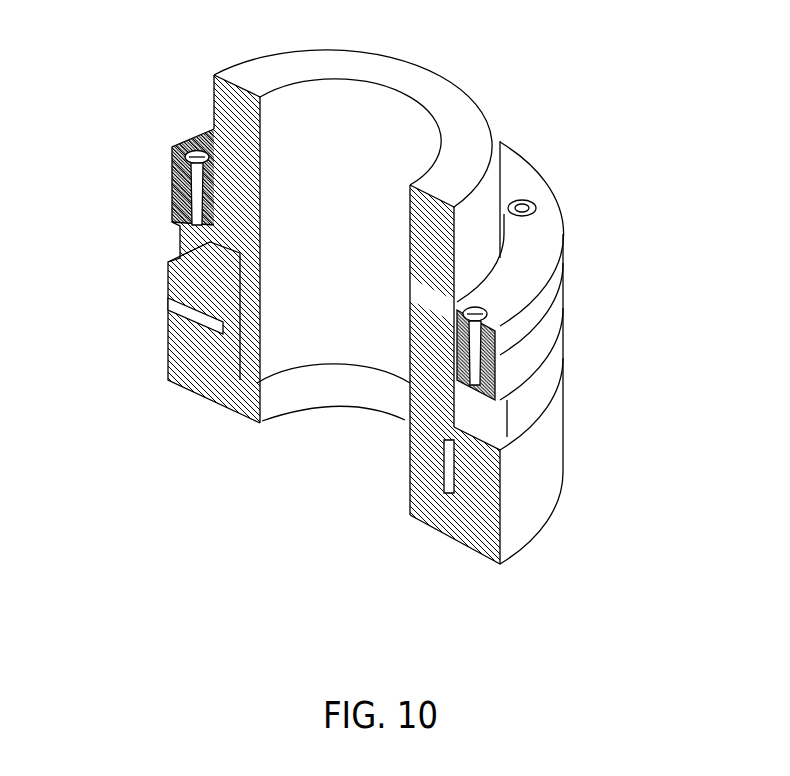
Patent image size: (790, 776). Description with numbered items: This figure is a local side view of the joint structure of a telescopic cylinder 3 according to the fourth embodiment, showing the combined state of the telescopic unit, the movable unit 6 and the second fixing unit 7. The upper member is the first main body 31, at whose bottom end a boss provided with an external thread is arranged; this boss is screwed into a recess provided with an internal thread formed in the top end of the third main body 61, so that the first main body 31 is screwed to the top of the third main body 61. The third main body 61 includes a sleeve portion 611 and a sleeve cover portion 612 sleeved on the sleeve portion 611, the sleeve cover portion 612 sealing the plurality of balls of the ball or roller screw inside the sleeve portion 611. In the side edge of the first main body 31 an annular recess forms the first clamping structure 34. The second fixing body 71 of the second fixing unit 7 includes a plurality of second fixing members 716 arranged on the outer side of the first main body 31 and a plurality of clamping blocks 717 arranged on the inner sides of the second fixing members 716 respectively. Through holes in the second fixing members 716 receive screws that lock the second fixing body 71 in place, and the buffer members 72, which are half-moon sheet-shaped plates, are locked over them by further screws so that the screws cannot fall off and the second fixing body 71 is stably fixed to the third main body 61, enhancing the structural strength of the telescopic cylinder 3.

The telescopic cylinder 3 is at (566, 86).
The first main body 31 is at (487, 207).
The first clamping structure 34 is at (457, 265).
The buffer member 72 is at (572, 283).
The sleeve cover portion 612 is at (527, 412).
The third main body 61 is at (621, 505).
The sleeve portion 611 is at (543, 497).
The movable unit 6 is at (157, 317).
The second fixing unit 7 is at (155, 168).
The second fixing body 71 is at (280, 533).
The second fixing member 716 is at (462, 380).
The clamping block 717 is at (430, 388).